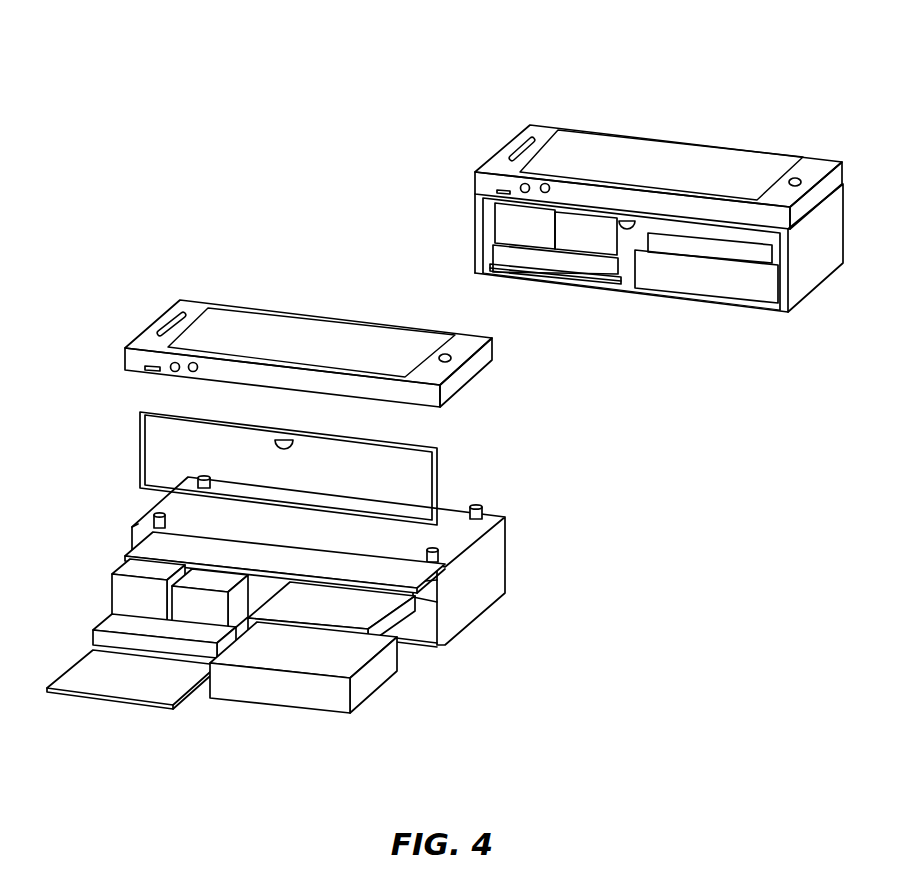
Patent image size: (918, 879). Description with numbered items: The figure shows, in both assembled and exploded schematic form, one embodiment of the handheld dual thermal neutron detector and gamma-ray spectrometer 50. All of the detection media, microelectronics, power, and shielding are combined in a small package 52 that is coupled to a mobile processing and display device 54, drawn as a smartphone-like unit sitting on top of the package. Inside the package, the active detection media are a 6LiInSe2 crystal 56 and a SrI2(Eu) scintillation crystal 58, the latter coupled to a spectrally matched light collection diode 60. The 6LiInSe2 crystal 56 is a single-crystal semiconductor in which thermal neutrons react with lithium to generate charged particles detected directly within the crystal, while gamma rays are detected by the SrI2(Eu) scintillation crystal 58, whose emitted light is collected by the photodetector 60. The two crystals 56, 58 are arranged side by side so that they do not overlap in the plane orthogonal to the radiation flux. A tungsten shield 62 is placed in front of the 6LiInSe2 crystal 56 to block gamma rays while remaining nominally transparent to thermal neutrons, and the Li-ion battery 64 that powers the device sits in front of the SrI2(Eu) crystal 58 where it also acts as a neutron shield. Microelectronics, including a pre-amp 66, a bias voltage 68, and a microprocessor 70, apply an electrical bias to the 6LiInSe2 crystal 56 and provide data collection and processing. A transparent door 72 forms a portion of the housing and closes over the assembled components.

The handheld dual thermal neutron detector and gamma-ray spectrometer 50 is at (703, 106).
The small package 52 is at (813, 225).
The mobile processing and display device 54 is at (553, 121).
The 6LiInSe2 crystal 56 is at (493, 258).
The SrI2(Eu) scintillation crystal 58 is at (733, 253).
The light collection diode 60 is at (627, 262).
The tungsten shield 62 is at (548, 276).
The Li-ion battery 64 is at (695, 290).
The pre-amp 66 is at (495, 218).
The bias voltage 68 is at (556, 214).
The microprocessor 70 is at (168, 538).
The transparent door 72 is at (135, 436).